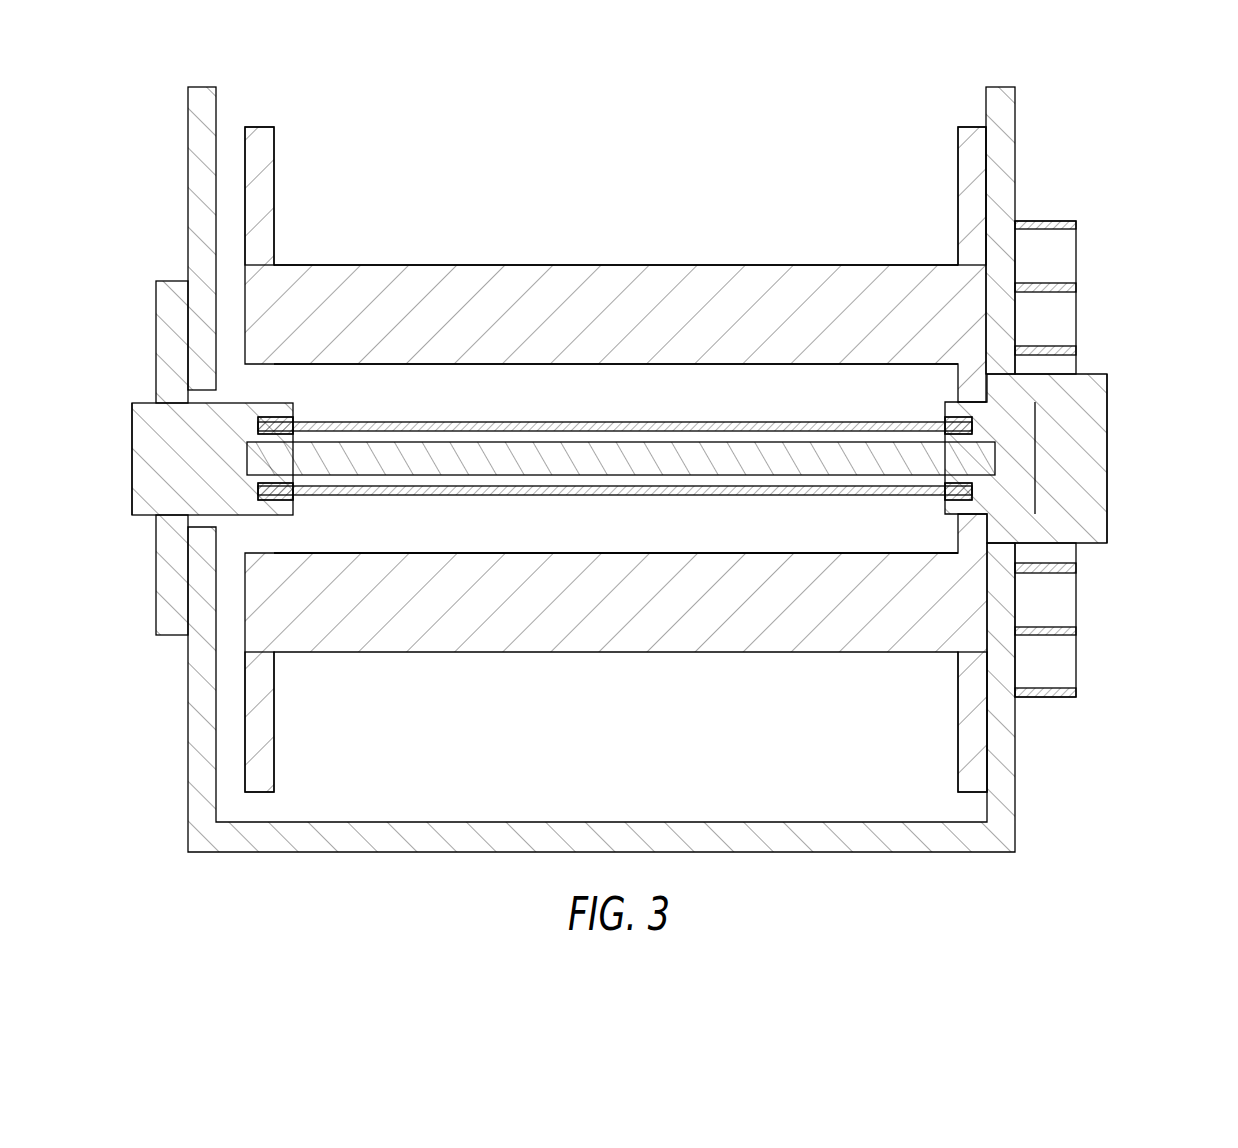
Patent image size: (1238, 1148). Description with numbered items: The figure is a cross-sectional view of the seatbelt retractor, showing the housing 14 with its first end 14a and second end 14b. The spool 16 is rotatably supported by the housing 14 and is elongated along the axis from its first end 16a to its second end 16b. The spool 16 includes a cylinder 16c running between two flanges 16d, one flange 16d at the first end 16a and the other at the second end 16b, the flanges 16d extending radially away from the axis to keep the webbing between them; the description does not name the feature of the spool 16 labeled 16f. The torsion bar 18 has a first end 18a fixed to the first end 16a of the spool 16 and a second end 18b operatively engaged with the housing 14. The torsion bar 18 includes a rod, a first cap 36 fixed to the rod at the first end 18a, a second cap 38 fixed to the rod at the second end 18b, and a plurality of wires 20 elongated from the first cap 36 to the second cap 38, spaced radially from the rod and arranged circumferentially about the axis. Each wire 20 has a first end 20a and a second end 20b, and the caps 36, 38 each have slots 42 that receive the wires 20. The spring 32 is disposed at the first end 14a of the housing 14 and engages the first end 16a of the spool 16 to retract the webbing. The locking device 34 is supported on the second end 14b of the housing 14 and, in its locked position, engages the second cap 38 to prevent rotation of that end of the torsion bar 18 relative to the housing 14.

The housing 14 is at (188, 808).
The first end of the housing 14a is at (1015, 122).
The second end of the housing 14b is at (188, 128).
The spool 16 is at (513, 192).
The first end of the spool 16a is at (954, 182).
The second end of the spool 16b is at (284, 182).
The cylinder 16c is at (648, 263).
The flange 16d is at (274, 733).
The bobbin inner surface 16f is at (484, 524).
The torsion bar 18 is at (826, 393).
The first end of the torsion bar 18a is at (1114, 485).
The second end of the torsion bar 18b is at (128, 486).
The wire 20 is at (605, 421).
The first end of the wire 20a is at (961, 424).
The second end of the wire 20b is at (274, 424).
The spring 32 is at (1058, 221).
The locking device 34 is at (156, 300).
The first cap 36 is at (1035, 447).
The second cap 38 is at (132, 457).
The slot 42 is at (258, 428).